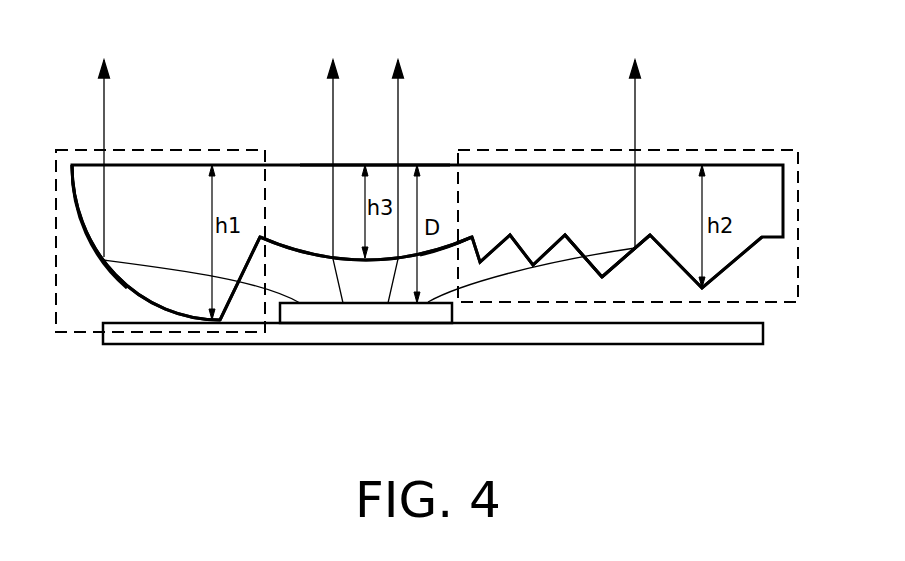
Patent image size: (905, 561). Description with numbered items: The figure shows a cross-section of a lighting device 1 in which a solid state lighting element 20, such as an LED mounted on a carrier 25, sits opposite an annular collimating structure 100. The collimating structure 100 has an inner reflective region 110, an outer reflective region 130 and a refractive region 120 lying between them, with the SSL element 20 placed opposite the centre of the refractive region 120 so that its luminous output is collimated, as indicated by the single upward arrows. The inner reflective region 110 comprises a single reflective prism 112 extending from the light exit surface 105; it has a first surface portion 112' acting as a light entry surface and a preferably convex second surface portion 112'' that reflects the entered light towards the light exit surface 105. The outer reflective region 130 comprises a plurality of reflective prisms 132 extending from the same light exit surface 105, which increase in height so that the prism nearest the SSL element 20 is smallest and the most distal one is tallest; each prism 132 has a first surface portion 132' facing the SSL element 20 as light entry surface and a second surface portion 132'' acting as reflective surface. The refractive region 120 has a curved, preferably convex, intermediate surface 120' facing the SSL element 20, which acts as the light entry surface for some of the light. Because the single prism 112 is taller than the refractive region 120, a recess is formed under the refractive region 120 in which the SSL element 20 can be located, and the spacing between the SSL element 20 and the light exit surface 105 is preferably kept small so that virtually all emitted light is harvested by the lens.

The lighting device 1 is at (749, 97).
The solid state lighting element 20 is at (368, 315).
The carrier 25 is at (313, 337).
The collimating structure 100 is at (375, 165).
The light exit surface 105 is at (680, 163).
The inner reflective region 110 is at (160, 150).
The reflective prism 112 is at (146, 278).
The first surface portion 112' is at (246, 314).
The second surface portion 112'' is at (108, 278).
The refractive region 120 is at (365, 169).
The intermediate surface 120' is at (443, 315).
The outer reflective region 130 is at (550, 148).
The reflective prisms 132 is at (617, 314).
The first surface portion 132' is at (553, 314).
The second surface portion 132'' is at (652, 314).